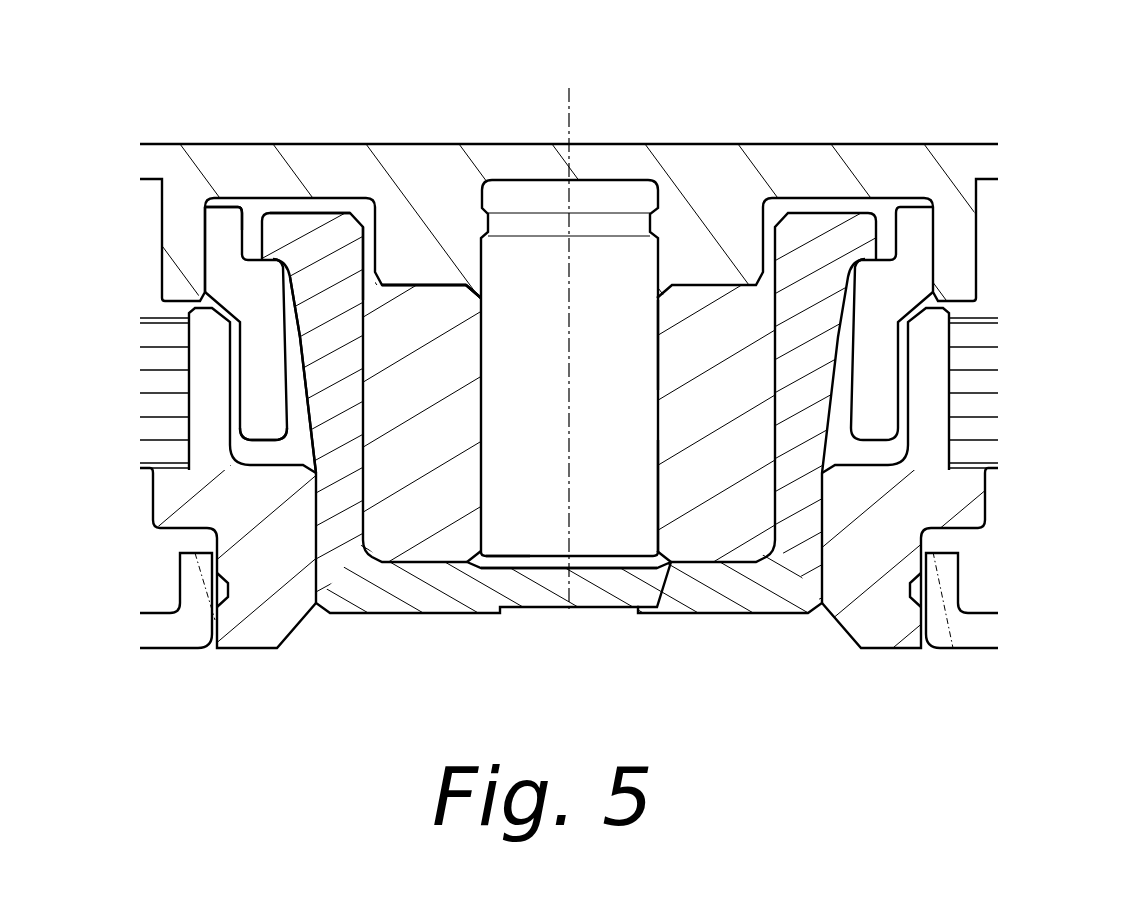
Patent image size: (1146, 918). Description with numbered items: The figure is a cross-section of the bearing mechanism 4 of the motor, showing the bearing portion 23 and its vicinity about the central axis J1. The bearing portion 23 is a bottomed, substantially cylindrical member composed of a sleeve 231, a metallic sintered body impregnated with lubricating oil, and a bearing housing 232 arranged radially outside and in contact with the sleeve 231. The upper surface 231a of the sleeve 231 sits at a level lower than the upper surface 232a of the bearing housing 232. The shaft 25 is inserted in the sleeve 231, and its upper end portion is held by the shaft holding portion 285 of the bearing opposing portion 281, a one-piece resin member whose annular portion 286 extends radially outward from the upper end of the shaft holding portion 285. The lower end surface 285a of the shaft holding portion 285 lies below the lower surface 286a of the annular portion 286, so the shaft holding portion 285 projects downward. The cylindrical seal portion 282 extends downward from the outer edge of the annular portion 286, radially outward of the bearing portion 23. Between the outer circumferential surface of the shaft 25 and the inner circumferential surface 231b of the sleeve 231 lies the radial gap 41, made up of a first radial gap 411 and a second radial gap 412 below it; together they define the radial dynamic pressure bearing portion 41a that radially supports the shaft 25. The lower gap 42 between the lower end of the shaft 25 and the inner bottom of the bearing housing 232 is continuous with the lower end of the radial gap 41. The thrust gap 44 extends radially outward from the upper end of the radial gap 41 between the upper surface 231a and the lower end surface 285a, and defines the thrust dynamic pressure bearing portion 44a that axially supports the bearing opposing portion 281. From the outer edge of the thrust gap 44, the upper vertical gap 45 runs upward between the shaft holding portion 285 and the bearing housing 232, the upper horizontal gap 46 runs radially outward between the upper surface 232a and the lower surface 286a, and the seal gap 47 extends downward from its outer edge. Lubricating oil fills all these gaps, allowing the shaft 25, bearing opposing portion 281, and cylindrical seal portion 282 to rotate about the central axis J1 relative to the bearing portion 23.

The bearing mechanism 4 is at (716, 95).
The radial gap 41 is at (1086, 408).
The first radial gap 411 is at (672, 348).
The second radial gap 412 is at (672, 482).
The radial dynamic pressure bearing portion 41a is at (672, 500).
The lower gap 42 is at (539, 575).
The thrust gap 44 is at (440, 273).
The thrust dynamic pressure bearing portion 44a is at (461, 273).
The upper vertical gap 45 is at (335, 288).
The upper horizontal gap 46 is at (350, 265).
The seal gap 47 is at (282, 333).
The bearing portion 23 is at (365, 686).
The sleeve 231 is at (423, 527).
The upper surface of the sleeve 231a is at (410, 273).
The inner circumferential surface of the sleeve 231b is at (648, 523).
The bearing housing 232 is at (343, 526).
The upper surface of the bearing housing 232a is at (285, 210).
The shaft 25 is at (503, 527).
The bearing opposing portion 281 is at (321, 49).
The cylindrical seal portion 282 is at (264, 418).
The shaft holding portion 285 is at (393, 247).
The lower end surface of the shaft holding portion 285a is at (318, 393).
The annular portion 286 is at (323, 210).
The lower surface of the annular portion 286a is at (215, 196).
The central axis J1 is at (560, 125).